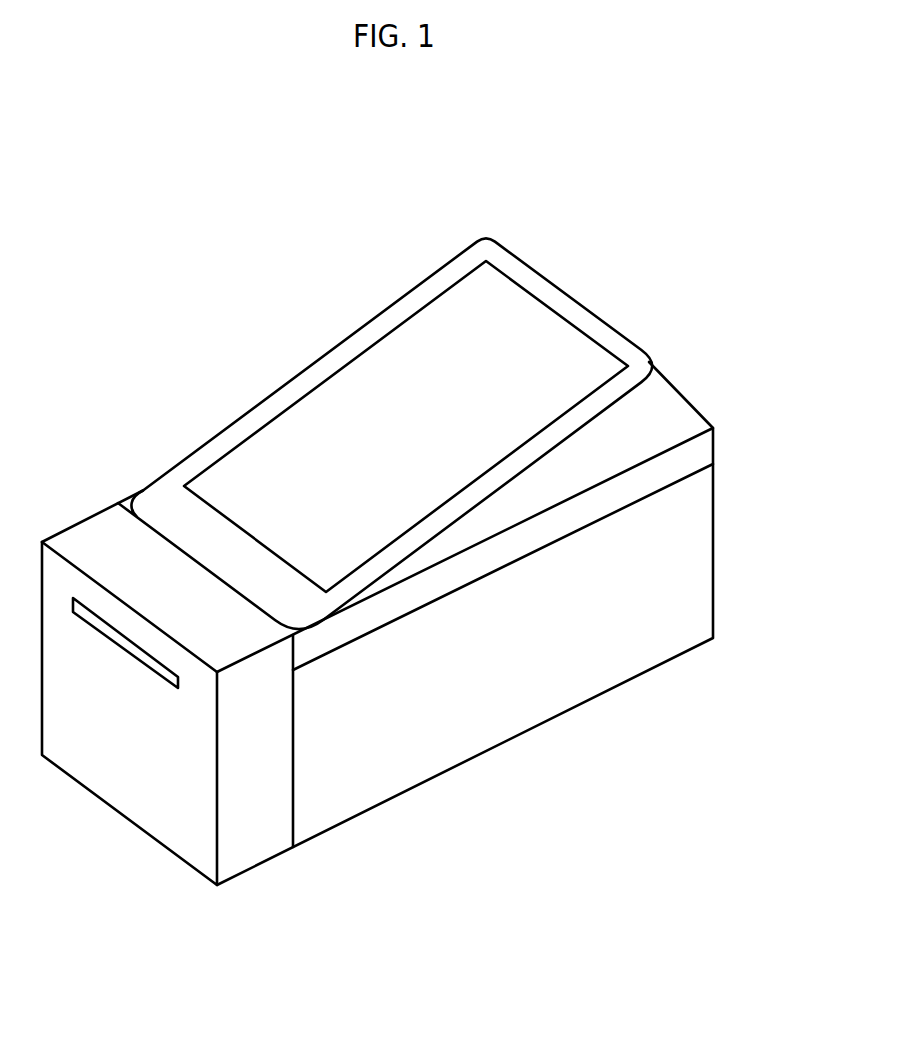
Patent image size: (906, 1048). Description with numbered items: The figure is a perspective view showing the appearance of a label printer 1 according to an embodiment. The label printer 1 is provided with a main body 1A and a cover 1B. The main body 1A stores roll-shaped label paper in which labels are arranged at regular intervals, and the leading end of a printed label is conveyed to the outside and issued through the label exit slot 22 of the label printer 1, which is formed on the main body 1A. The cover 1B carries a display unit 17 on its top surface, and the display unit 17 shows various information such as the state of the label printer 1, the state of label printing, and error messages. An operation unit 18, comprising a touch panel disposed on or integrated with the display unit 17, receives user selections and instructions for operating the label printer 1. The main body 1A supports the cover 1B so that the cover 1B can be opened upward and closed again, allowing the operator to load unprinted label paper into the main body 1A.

The label printer 1 is at (606, 234).
The main body 1A is at (410, 674).
The cover 1B is at (648, 410).
The display unit 17 is at (397, 372).
The operation unit 18 is at (330, 428).
The label exit slot 22 is at (125, 650).